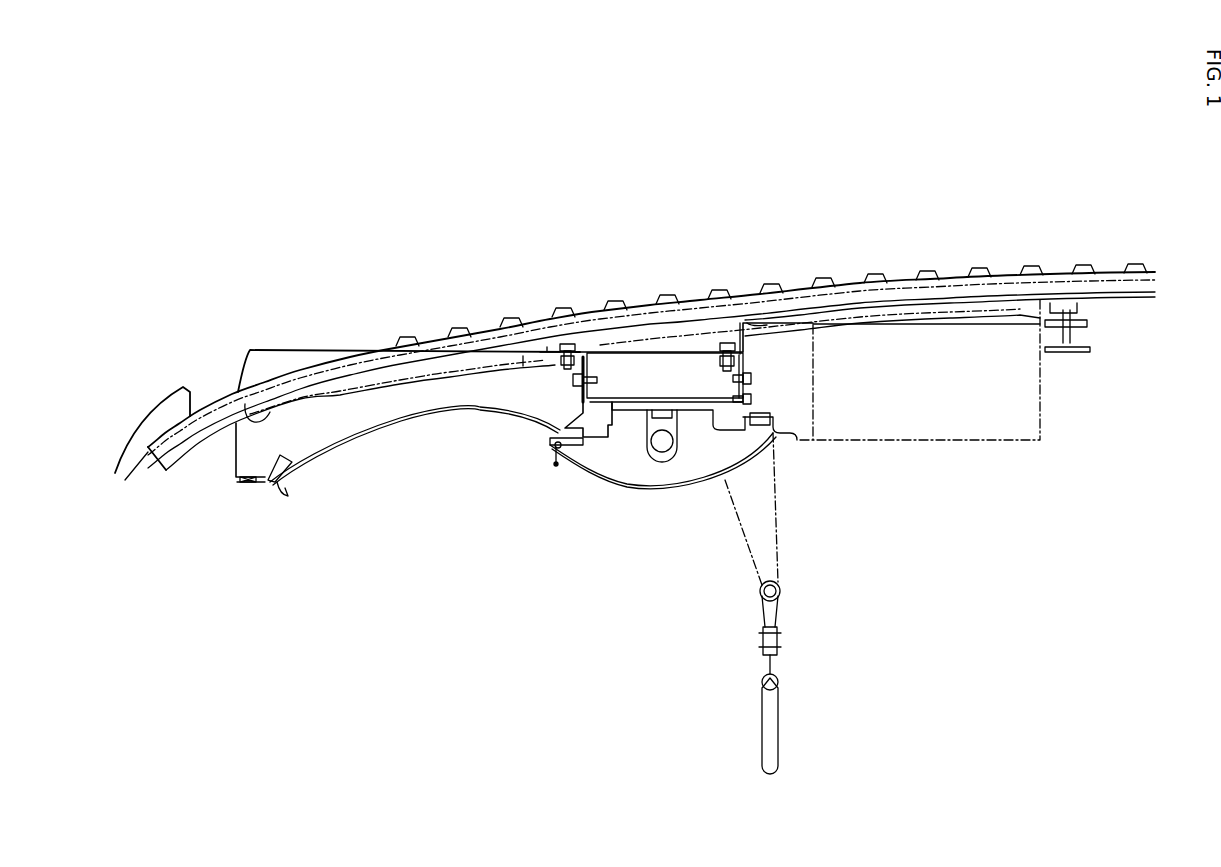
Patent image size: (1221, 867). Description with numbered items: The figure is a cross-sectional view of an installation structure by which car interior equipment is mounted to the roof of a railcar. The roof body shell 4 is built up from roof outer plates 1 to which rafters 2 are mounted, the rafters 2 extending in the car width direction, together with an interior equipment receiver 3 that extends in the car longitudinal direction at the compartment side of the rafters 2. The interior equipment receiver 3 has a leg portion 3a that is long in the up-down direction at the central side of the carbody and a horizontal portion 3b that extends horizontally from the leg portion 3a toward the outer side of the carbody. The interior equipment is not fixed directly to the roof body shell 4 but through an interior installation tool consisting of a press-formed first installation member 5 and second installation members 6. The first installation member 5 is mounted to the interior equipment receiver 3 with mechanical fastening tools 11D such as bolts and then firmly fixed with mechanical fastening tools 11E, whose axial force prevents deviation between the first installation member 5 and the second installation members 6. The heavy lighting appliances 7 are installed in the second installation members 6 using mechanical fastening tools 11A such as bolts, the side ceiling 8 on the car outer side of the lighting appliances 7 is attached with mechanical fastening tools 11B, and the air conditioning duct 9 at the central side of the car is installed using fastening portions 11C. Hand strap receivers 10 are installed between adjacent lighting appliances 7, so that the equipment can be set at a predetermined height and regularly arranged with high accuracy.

The roof outer plate 1 is at (827, 276).
The rafter 2 is at (597, 340).
The interior equipment receiver 3 is at (650, 351).
The leg portion 3a is at (740, 340).
The horizontal portion 3b is at (547, 347).
The roof body shell 4 is at (880, 266).
The first installation member 5 is at (570, 383).
The second installation member 6 is at (610, 395).
The lighting appliance 7 is at (623, 490).
The side ceiling 8 is at (487, 413).
The air conditioning duct 9 is at (917, 442).
The hand strap receiver 10 is at (742, 520).
The mechanical fastening tool 11A is at (707, 388).
The mechanical fastening tool 11B is at (614, 426).
The fastening portion 11C is at (758, 400).
The mechanical fastening tool 11D is at (565, 344).
The mechanical fastening tool 11E is at (572, 379).